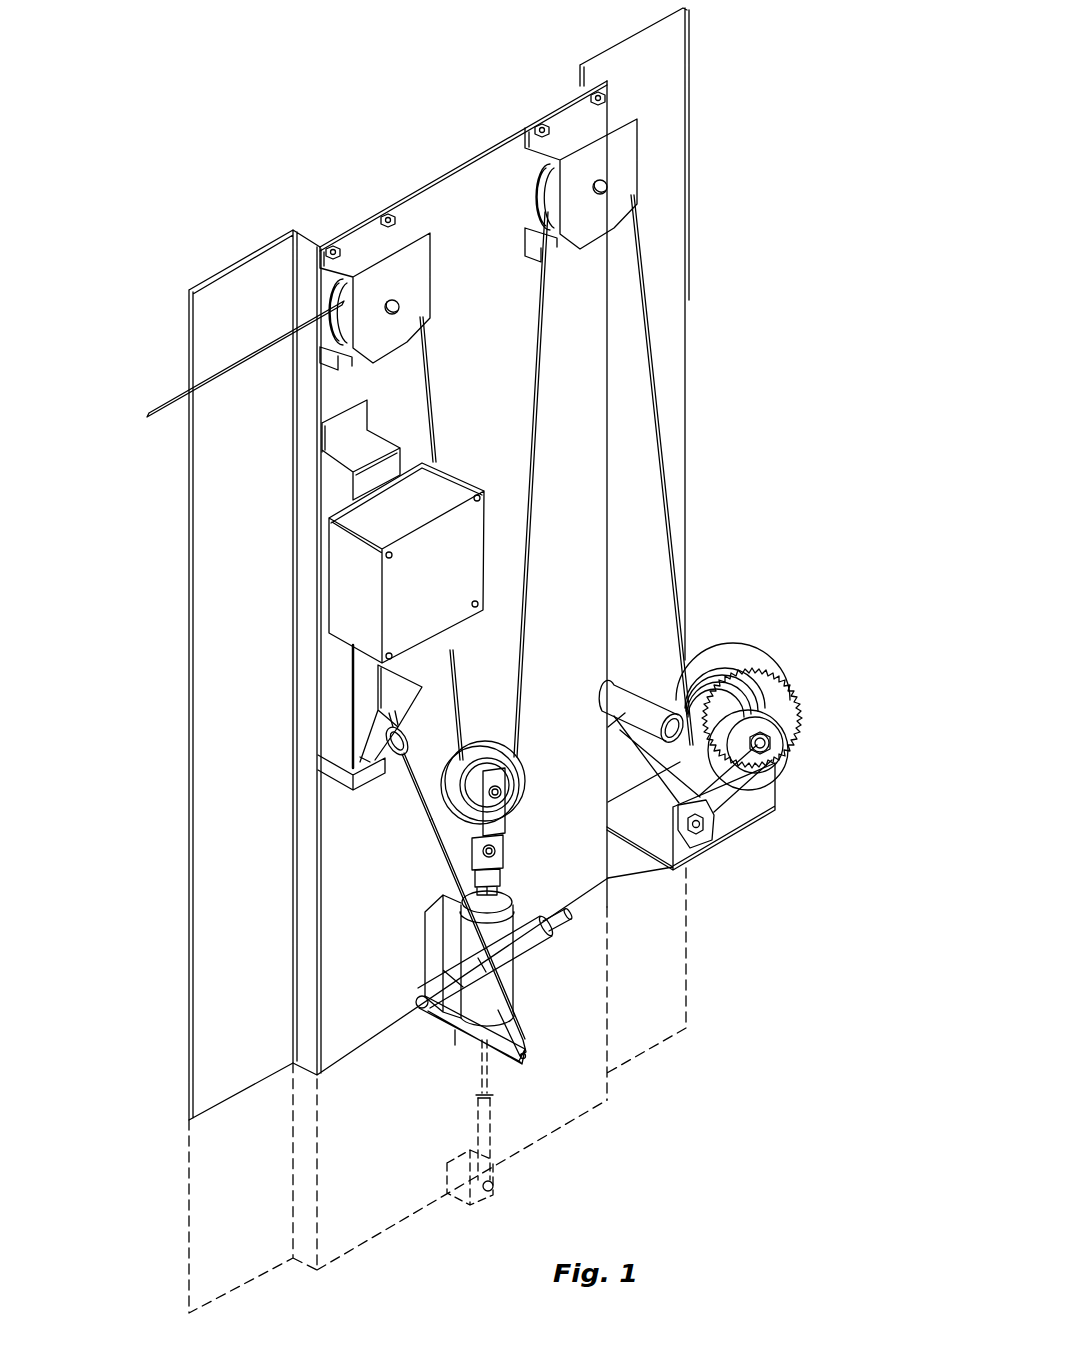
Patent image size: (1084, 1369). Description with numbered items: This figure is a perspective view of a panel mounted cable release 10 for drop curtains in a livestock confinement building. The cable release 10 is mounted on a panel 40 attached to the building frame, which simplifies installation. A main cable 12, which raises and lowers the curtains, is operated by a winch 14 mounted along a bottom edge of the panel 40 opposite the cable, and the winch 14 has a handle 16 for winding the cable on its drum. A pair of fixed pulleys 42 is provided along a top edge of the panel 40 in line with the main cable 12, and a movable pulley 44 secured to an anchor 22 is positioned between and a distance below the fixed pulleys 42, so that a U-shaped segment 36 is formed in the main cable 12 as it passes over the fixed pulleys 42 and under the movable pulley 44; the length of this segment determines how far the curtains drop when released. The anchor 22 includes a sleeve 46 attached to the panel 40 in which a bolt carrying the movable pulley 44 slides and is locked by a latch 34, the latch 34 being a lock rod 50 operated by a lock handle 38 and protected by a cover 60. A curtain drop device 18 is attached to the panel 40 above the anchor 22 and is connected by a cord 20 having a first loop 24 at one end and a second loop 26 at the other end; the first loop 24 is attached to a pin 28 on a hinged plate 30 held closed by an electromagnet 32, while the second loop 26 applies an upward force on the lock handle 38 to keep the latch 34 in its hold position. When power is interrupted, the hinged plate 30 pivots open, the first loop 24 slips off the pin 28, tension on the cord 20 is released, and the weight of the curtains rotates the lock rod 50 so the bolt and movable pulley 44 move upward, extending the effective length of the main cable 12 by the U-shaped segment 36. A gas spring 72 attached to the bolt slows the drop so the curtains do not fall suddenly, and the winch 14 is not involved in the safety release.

The cable release 10 is at (593, 569).
The main cable 12 is at (167, 400).
The winch 14 is at (775, 668).
The handle 16 is at (640, 706).
The curtain drop device 18 is at (352, 608).
The cord 20 is at (442, 862).
The anchor 22 is at (520, 866).
The first loop 24 is at (397, 772).
The second loop 26 is at (517, 1047).
The pin 28 is at (402, 738).
The hinged plate 30 is at (370, 718).
The electromagnet 32 is at (398, 668).
The latch 34 is at (408, 1004).
The U-shaped segment 36 is at (528, 382).
The lock handle 38 is at (458, 1042).
The panel 40 is at (688, 300).
The fixed pulleys 42 is at (433, 268).
The movable pulley 44 is at (522, 760).
The sleeve 46 is at (465, 945).
The lock rod 50 is at (563, 930).
The cover 60 is at (523, 928).
The gas spring 72 is at (492, 1122).